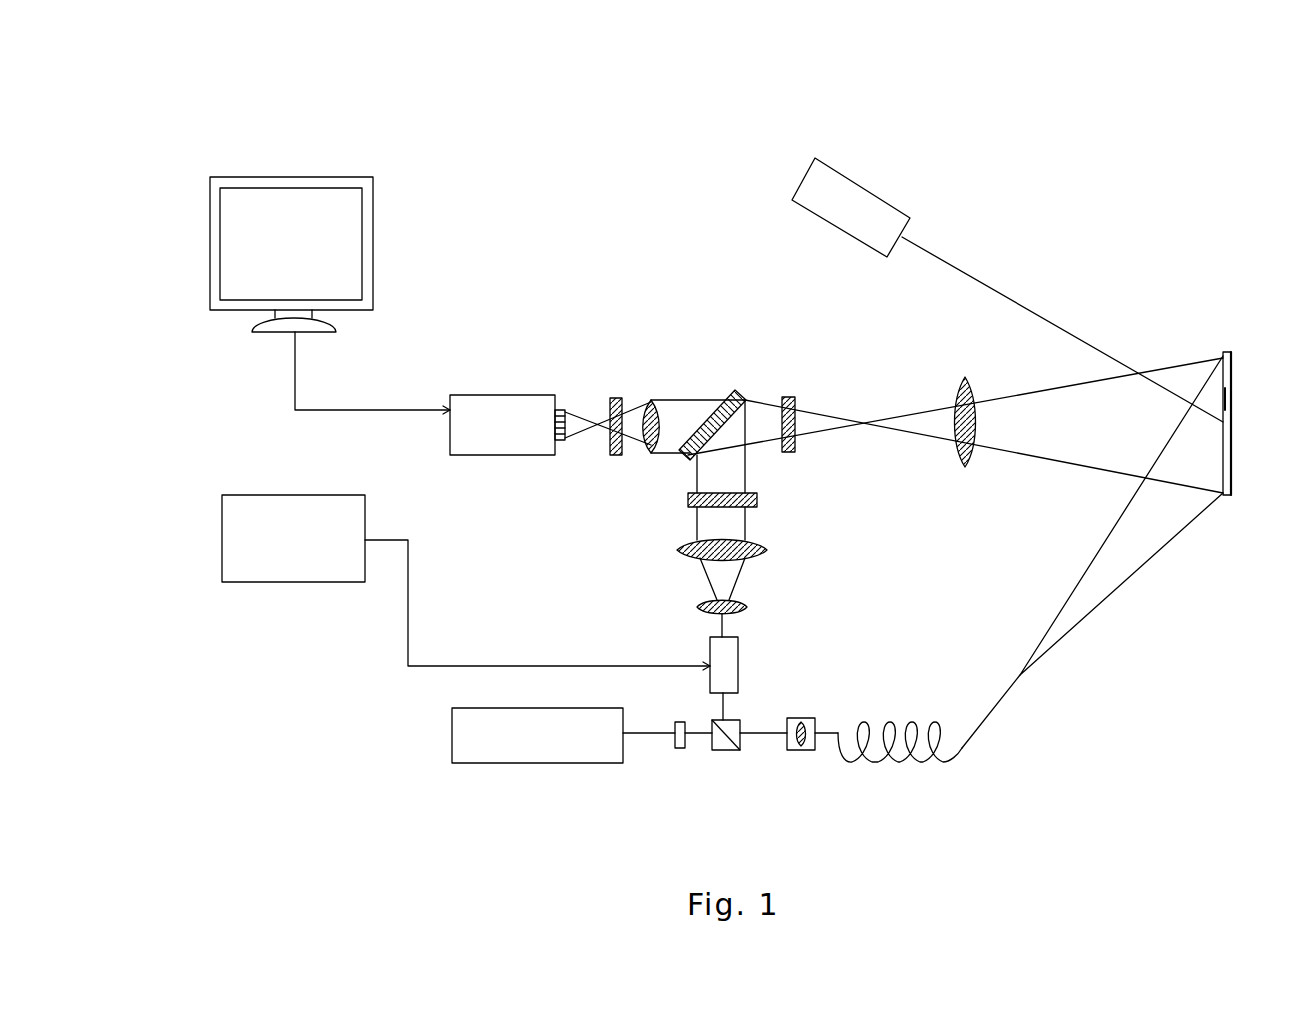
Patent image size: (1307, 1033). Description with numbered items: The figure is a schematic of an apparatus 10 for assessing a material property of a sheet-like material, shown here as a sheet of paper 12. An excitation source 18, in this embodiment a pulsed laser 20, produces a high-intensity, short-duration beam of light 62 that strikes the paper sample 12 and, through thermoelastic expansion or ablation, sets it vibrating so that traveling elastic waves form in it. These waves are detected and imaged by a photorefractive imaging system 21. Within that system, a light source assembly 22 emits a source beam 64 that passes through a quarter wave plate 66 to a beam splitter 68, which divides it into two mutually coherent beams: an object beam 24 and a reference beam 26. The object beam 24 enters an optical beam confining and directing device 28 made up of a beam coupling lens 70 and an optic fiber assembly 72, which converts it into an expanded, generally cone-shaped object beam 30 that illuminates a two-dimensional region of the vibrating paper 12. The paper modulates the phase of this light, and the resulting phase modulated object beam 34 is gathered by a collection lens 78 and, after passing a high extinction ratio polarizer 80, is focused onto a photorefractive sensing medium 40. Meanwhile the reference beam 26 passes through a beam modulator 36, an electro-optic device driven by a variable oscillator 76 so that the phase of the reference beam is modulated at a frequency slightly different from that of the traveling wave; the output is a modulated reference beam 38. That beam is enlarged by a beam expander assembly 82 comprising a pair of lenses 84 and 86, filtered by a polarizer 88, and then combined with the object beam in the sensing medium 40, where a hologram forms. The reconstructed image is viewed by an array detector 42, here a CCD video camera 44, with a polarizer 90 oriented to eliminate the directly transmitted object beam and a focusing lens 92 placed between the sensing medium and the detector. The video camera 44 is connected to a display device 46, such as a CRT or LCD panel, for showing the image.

The apparatus 10 is at (197, 133).
The sheet of paper 12 is at (1233, 393).
The excitation source 18 is at (797, 180).
The laser 20 is at (850, 178).
The photorefractive imaging system 21 is at (697, 307).
The light source assembly 22 is at (538, 772).
The object beam 24 is at (762, 735).
The reference beam 26 is at (723, 715).
The optical beam confining and directing device 28 is at (857, 762).
The expanded object beam 30 is at (1082, 622).
The phase modulated object beam 34 is at (1070, 465).
The beam modulator 36 is at (738, 660).
The modulated reference beam 38 is at (722, 633).
The photorefractive sensing medium 40 is at (735, 388).
The array detector 42 is at (481, 393).
The video camera 44 is at (515, 458).
The display device 46 is at (212, 235).
The beam of light 62 is at (1013, 303).
The source beam 64 is at (661, 735).
The quarter wave plate 66 is at (682, 722).
The beam splitter 68 is at (740, 750).
The beam coupling lens 70 is at (812, 718).
The optic fiber assembly 72 is at (972, 722).
The variable oscillator 76 is at (222, 540).
The collection lens 78 is at (963, 380).
The polarizer 80 is at (786, 397).
The beam expander assembly 82 is at (703, 571).
The lens 84 is at (740, 604).
The lens 86 is at (765, 546).
The polarizer 88 is at (757, 499).
The polarizer 90 is at (612, 397).
The focusing lens 92 is at (652, 453).